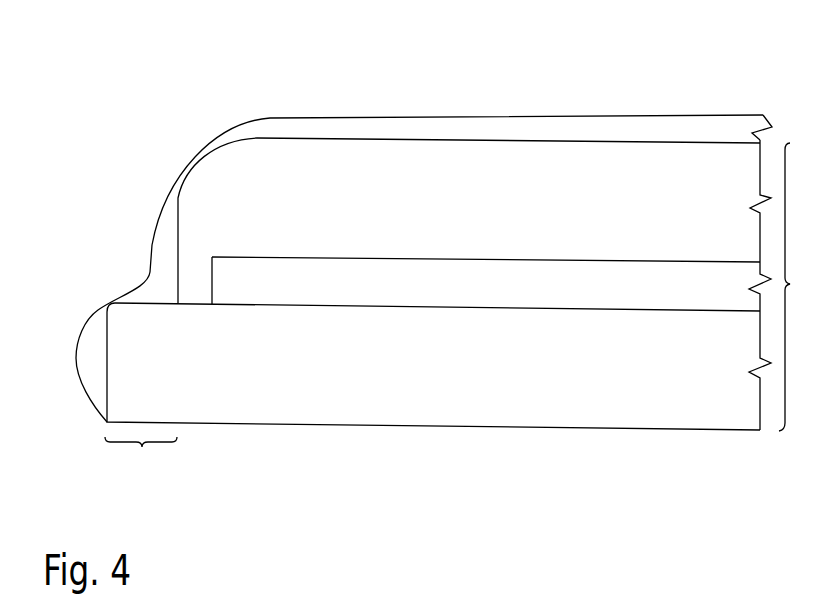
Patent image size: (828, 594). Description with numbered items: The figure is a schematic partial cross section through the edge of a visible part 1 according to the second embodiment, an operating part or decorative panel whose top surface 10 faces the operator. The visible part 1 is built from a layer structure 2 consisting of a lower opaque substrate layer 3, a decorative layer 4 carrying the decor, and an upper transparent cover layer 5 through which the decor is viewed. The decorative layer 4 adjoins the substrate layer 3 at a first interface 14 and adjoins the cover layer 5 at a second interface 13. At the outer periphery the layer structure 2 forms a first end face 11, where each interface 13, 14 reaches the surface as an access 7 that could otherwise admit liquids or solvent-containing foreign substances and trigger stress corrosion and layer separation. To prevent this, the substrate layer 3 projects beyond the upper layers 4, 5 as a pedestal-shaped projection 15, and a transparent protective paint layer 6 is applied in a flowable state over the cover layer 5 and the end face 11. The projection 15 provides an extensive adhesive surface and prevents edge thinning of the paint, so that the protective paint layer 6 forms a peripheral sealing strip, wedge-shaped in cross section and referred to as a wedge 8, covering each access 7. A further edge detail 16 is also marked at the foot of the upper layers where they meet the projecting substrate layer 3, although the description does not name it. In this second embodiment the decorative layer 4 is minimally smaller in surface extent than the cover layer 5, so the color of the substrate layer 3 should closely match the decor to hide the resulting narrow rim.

The visible part 1 is at (207, 90).
The layer structure 2 is at (459, 271).
The substrate layer 3 is at (651, 407).
The decorative layer 4 is at (646, 290).
The cover layer 5 is at (583, 178).
The protective paint layer 6 is at (516, 128).
The access 7 is at (175, 301).
The wedge 8 is at (140, 297).
The top surface 10 is at (430, 108).
The first end face 11 is at (128, 208).
The second interface 13 is at (294, 262).
The first interface 14 is at (464, 314).
The projection 15 is at (126, 391).
The edge corner 16 is at (192, 311).